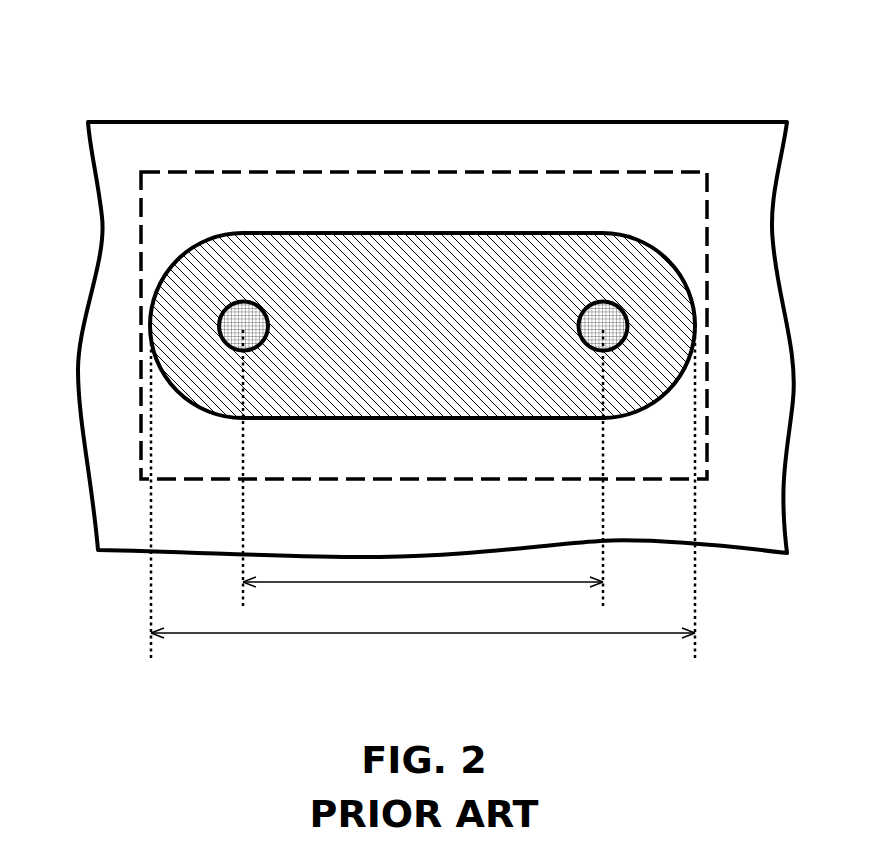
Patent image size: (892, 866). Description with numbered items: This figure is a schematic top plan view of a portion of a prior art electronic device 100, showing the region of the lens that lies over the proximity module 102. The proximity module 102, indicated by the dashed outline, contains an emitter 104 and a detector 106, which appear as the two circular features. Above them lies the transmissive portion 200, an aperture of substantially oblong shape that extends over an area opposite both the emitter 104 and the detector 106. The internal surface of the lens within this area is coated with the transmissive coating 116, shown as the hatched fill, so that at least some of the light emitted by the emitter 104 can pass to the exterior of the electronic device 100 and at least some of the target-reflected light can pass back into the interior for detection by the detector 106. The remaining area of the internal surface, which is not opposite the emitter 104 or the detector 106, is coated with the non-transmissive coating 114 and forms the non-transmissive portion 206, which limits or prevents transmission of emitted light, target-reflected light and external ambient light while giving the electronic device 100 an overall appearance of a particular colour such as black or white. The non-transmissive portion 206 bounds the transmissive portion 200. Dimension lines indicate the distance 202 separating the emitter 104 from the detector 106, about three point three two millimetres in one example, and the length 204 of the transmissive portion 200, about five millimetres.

The electronic device 100 is at (177, 66).
The non-transmissive coating 114 is at (201, 138).
The non-transmissive portion 206 is at (421, 110).
The proximity module 102 is at (431, 493).
The transmissive portion 200 is at (421, 222).
The transmissive coating 116 is at (283, 248).
The emitter 104 is at (595, 310).
The detector 106 is at (257, 340).
The distance 202 is at (423, 470).
The length 204 is at (423, 496).